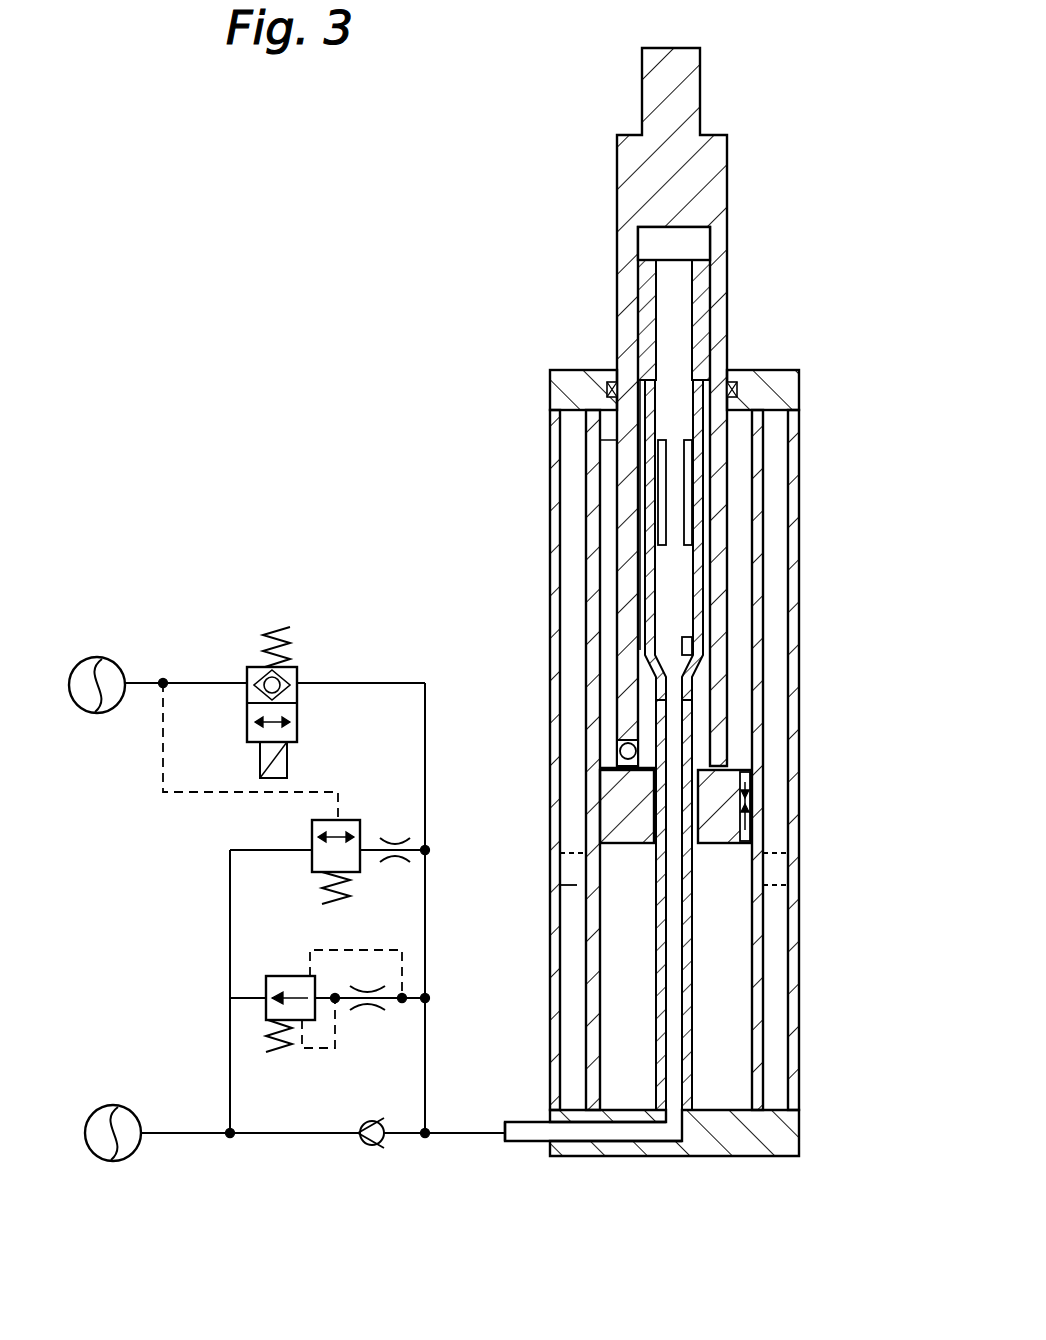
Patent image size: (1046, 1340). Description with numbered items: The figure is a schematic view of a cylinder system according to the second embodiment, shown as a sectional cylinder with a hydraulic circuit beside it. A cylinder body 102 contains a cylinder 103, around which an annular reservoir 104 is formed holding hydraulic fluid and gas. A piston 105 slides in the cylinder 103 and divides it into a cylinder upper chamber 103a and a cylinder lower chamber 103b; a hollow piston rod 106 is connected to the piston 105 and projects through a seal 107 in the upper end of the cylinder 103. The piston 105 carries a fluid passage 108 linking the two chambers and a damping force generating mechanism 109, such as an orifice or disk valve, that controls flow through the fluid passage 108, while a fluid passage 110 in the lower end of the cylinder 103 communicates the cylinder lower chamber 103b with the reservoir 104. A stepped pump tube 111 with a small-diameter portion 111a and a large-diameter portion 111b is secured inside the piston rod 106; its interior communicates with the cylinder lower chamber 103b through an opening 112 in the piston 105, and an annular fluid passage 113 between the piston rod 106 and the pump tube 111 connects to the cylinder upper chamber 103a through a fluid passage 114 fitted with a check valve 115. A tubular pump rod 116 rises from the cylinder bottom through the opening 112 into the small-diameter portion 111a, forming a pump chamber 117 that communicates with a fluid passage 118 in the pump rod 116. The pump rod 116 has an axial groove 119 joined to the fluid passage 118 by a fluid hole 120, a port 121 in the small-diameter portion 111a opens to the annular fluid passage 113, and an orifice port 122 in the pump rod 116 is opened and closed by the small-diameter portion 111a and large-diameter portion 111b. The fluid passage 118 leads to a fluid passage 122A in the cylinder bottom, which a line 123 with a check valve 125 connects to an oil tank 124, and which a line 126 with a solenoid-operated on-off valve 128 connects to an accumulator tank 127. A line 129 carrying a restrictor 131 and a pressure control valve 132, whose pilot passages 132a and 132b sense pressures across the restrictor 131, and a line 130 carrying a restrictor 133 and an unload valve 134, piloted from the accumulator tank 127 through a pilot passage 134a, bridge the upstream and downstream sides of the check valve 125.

The cylinder body 102 is at (783, 368).
The cylinder 103 is at (775, 421).
The cylinder upper chamber 103a is at (603, 596).
The cylinder lower chamber 103b is at (737, 888).
The annular reservoir 104 is at (773, 461).
The piston 105 is at (607, 824).
The hollow piston rod 106 is at (727, 139).
The seal 107 is at (735, 372).
The fluid passage 108 is at (750, 773).
The damping force generating mechanism 109 is at (752, 803).
The fluid passage 110 is at (720, 1112).
The stepped pump tube 111 is at (702, 322).
The small-diameter portion 111a is at (712, 258).
The large-diameter portion 111b is at (702, 700).
The opening 112 is at (603, 790).
The annular fluid passage 113 is at (644, 567).
The fluid passage 114 is at (620, 717).
The check valve 115 is at (617, 751).
The tubular pump rod 116 is at (690, 962).
The pump chamber 117 is at (665, 306).
The fluid passage 118 is at (682, 1005).
The groove 119 is at (705, 560).
The fluid hole 120 is at (690, 500).
The port 121 is at (618, 445).
The orifice port 122 is at (700, 640).
The fluid passage 122A is at (622, 1157).
The line 123 is at (462, 1142).
The oil tank 124 is at (113, 1105).
The check valve 125 is at (364, 1146).
The line 126 is at (428, 1062).
The accumulator tank 127 is at (97, 655).
The solenoid-operated on-off valve 128 is at (299, 660).
The line 129 is at (250, 998).
The line 130 is at (245, 850).
The restrictor 131 is at (402, 985).
The pressure control valve 132 is at (283, 976).
The pilot passage 132a is at (395, 943).
The pilot passage 132b is at (307, 1050).
The restrictor 133 is at (405, 840).
The unload valve 134 is at (347, 817).
The pilot passage 134a is at (163, 740).